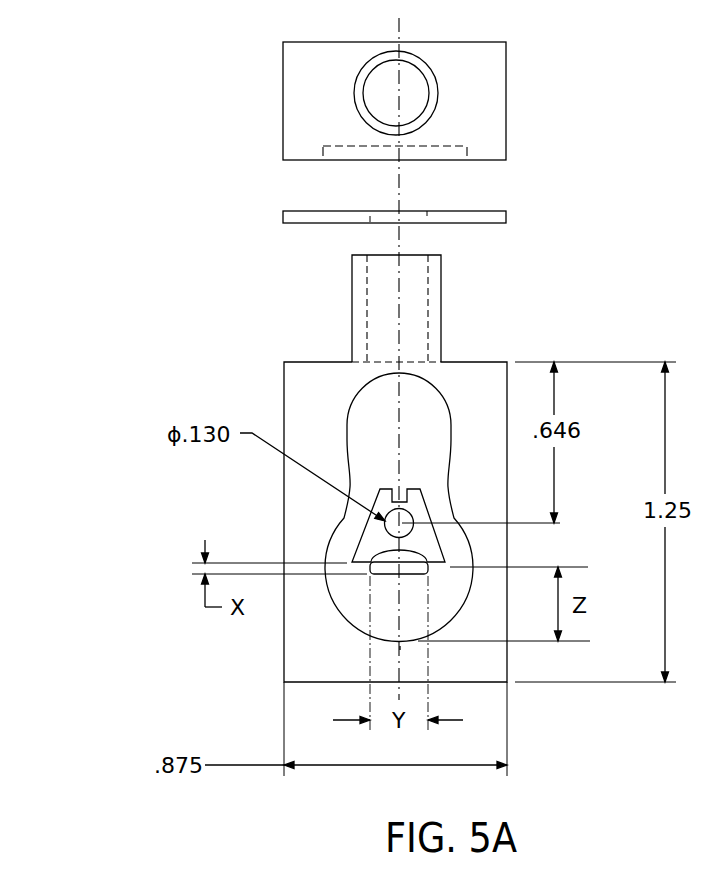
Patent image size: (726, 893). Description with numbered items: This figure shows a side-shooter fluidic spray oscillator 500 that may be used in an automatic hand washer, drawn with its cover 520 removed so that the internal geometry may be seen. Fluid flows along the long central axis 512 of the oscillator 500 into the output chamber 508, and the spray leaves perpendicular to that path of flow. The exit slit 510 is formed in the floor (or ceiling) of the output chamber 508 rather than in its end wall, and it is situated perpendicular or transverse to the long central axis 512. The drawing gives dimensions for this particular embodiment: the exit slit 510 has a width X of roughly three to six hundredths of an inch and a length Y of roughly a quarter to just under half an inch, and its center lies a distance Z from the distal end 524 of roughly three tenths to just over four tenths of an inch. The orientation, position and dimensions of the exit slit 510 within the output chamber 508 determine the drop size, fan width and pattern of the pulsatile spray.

The side-shooter fluidic spray oscillator 500 is at (233, 378).
The output chamber 508 is at (447, 597).
The exit slit 510 is at (385, 578).
The long central axis 512 is at (407, 307).
The cover 520 is at (483, 223).
The distal end 524 is at (400, 646).